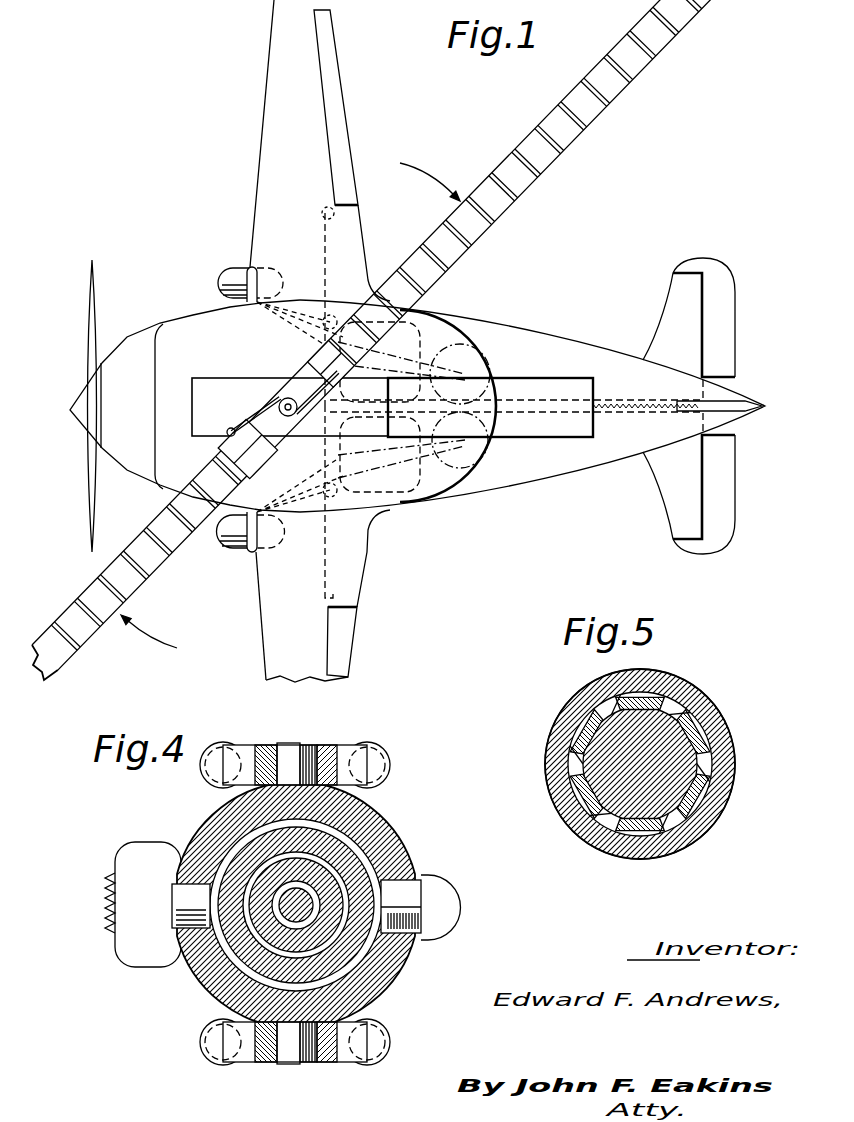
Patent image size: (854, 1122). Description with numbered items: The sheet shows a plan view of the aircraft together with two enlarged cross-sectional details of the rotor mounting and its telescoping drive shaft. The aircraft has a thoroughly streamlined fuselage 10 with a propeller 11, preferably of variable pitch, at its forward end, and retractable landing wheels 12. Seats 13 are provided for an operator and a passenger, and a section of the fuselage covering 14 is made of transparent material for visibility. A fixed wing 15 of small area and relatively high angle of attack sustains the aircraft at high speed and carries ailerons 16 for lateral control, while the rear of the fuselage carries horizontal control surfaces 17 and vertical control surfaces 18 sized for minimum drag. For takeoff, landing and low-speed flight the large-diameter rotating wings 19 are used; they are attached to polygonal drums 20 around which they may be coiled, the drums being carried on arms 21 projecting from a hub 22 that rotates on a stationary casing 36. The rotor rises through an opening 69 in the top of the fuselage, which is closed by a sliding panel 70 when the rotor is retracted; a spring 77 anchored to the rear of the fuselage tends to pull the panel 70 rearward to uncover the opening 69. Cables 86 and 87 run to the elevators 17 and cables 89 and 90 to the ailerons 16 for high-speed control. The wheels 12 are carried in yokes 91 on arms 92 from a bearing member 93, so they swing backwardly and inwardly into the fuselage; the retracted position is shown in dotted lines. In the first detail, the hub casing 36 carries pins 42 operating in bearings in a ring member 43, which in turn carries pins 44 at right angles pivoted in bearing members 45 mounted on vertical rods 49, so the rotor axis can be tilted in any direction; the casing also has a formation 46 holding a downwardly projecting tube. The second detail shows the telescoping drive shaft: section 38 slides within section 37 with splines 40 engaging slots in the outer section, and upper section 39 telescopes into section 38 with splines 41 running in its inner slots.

In FIG. 1, the fuselage 10 is at (487, 483).
In FIG. 1, the propeller 11 is at (88, 495).
In FIG. 1, the landing wheels 12 is at (227, 278).
In FIG. 1, the seats 13 is at (442, 313).
In FIG. 1, the fuselage covering 14 is at (187, 327).
In FIG. 1, the fixed wing 15 is at (273, 144).
In FIG. 1, the ailerons 16 is at (342, 122).
In FIG. 1, the horizontal control surfaces 17 is at (722, 325).
In FIG. 1, the vertical control surfaces 18 is at (733, 403).
In FIG. 1, the rotating wings 19 is at (564, 143).
In FIG. 1, the polygonal drums 20 is at (313, 365).
In FIG. 1, the arms 21 is at (257, 410).
In FIG. 1, the hub 22 is at (282, 417).
In FIG. 1, the opening 69 is at (243, 380).
In FIG. 1, the sliding panel 70 is at (530, 388).
In FIG. 1, the spring 77 is at (645, 400).
In FIG. 1, the cable 86 is at (522, 400).
In FIG. 1, the cable 87 is at (522, 415).
In FIG. 1, the cable 89 is at (325, 250).
In FIG. 1, the cable 90 is at (325, 562).
In FIG. 1, the yokes 91 is at (253, 267).
In FIG. 1, the arms 92 is at (290, 340).
In FIG. 1, the bearing member 93 is at (333, 313).
In FIG. 4, the stationary casing 36 is at (378, 836).
In FIG. 4, the ring member 43 is at (345, 852).
In FIG. 4, the pins 42 is at (407, 897).
In FIG. 4, the pins 44 is at (298, 745).
In FIG. 4, the bearing members 45 is at (330, 745).
In FIG. 4, the formation 46 is at (450, 902).
In FIG. 4, the rods 49 is at (392, 746).
In FIG. 5, the shaft section 37 is at (557, 733).
In FIG. 5, the shaft section 38 is at (570, 745).
In FIG. 5, the shaft section 39 is at (570, 767).
In FIG. 5, the splines 40 is at (648, 676).
In FIG. 5, the splines 41 is at (603, 705).